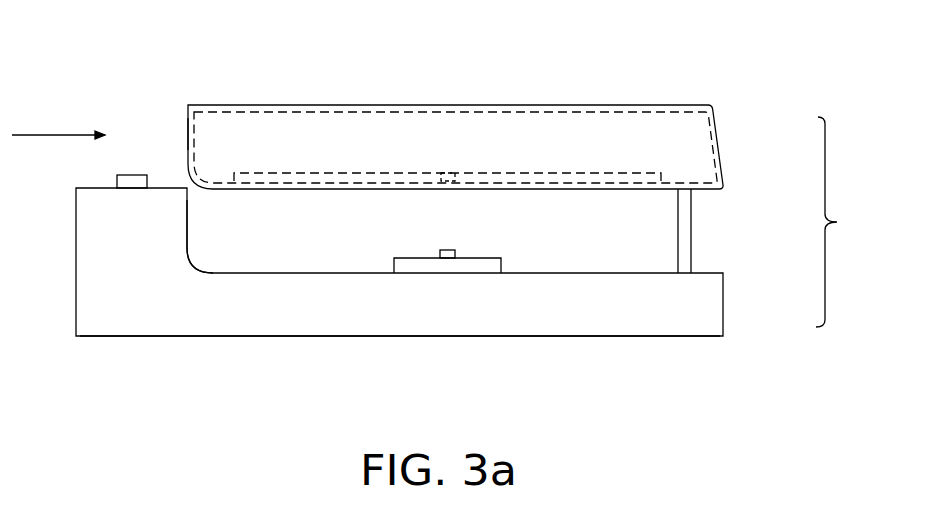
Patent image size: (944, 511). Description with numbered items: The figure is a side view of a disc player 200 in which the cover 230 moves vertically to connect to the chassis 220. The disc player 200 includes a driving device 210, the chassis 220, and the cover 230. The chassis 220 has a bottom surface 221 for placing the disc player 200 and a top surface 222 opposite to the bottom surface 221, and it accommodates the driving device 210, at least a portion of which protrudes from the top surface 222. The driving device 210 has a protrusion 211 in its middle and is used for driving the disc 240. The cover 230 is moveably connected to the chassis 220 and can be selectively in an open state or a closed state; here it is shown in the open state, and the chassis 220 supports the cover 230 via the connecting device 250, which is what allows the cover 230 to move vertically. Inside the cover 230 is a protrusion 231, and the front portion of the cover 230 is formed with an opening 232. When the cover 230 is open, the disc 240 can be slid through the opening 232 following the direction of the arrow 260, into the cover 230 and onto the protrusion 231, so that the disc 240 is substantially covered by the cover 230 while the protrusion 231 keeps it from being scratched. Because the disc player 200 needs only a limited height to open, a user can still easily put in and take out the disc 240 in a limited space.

The disc player 200 is at (853, 222).
The driving device 210 is at (501, 262).
The protrusion 211 is at (448, 250).
The chassis 220 is at (723, 305).
The bottom surface 221 is at (592, 336).
The top surface 222 is at (196, 262).
The cover 230 is at (436, 142).
The protrusion 231 is at (289, 190).
The opening 232 is at (188, 132).
The disc 240 is at (585, 172).
The connecting device 250 is at (691, 232).
The arrow 260 is at (58, 124).